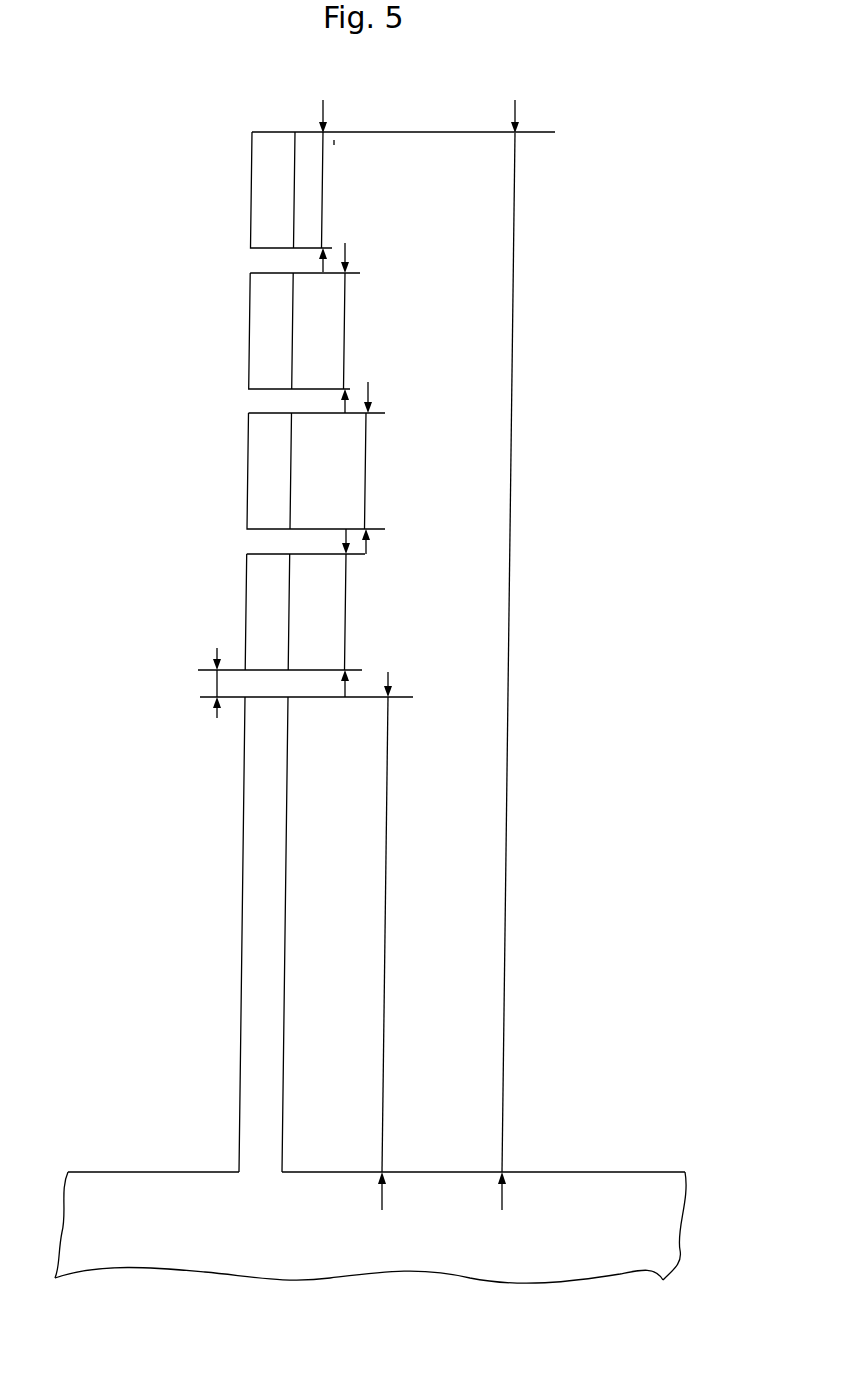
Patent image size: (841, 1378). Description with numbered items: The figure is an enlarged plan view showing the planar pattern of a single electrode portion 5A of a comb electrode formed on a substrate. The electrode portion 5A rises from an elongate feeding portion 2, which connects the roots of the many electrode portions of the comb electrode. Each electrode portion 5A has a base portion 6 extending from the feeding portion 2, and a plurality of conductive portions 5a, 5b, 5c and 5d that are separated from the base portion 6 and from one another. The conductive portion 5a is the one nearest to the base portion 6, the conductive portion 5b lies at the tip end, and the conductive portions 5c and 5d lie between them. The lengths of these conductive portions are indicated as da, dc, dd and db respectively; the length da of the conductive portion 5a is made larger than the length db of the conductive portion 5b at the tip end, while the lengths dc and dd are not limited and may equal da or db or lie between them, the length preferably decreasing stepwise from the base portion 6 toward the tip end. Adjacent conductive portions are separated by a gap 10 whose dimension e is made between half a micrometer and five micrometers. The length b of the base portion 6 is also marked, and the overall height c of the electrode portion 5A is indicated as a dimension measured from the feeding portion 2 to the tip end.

The feeding portion 2 is at (637, 1196).
The base portion 6 is at (257, 1050).
The electrode portion 5A is at (335, 147).
The conductive portion 5a is at (265, 613).
The conductive portion 5b is at (258, 177).
The conductive portion 5c is at (262, 462).
The conductive portion 5d is at (259, 328).
The gap 10 is at (233, 540).
The length of conductive portion 5a da is at (346, 608).
The length of conductive portion 5b db is at (324, 185).
The length of conductive portion 5c dc is at (366, 466).
The length of conductive portion 5d dd is at (345, 330).
The dimension of the gap e is at (217, 680).
The length of the base portion b is at (385, 909).
The total probe height c is at (512, 418).